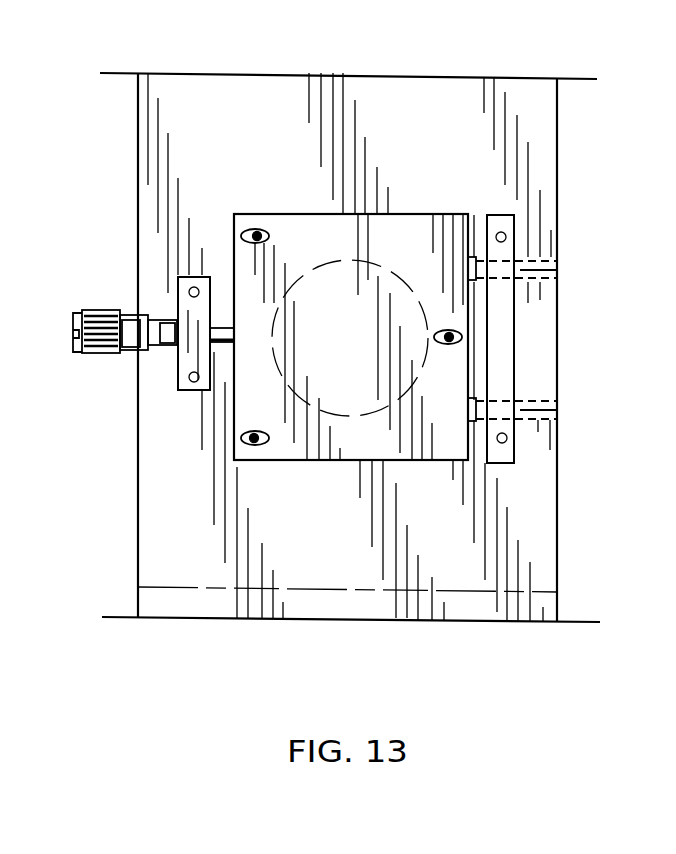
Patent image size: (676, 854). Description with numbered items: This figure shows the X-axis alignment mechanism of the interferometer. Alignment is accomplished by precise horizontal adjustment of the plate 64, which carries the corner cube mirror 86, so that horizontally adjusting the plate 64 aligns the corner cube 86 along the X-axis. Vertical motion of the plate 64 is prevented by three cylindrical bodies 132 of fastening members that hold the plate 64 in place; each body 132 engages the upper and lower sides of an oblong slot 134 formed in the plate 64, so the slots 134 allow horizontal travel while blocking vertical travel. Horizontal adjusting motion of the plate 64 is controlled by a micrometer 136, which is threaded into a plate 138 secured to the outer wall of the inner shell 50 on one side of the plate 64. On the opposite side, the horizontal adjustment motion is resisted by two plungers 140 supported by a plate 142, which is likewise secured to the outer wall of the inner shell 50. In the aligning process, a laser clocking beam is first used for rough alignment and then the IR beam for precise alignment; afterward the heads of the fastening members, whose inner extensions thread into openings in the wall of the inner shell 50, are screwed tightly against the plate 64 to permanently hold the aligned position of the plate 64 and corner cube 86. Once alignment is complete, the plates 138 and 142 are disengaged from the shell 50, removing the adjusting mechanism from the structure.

The inner shell 50 is at (568, 514).
The plate 64 is at (413, 213).
The corner cube mirror 86 is at (382, 271).
The cylindrical bodies of fastening members 132 is at (262, 232).
The oblong slots 134 is at (270, 238).
The micrometer 136 is at (138, 312).
The plate 138 is at (186, 367).
The plungers 140 is at (540, 268).
The plate 142 is at (503, 370).